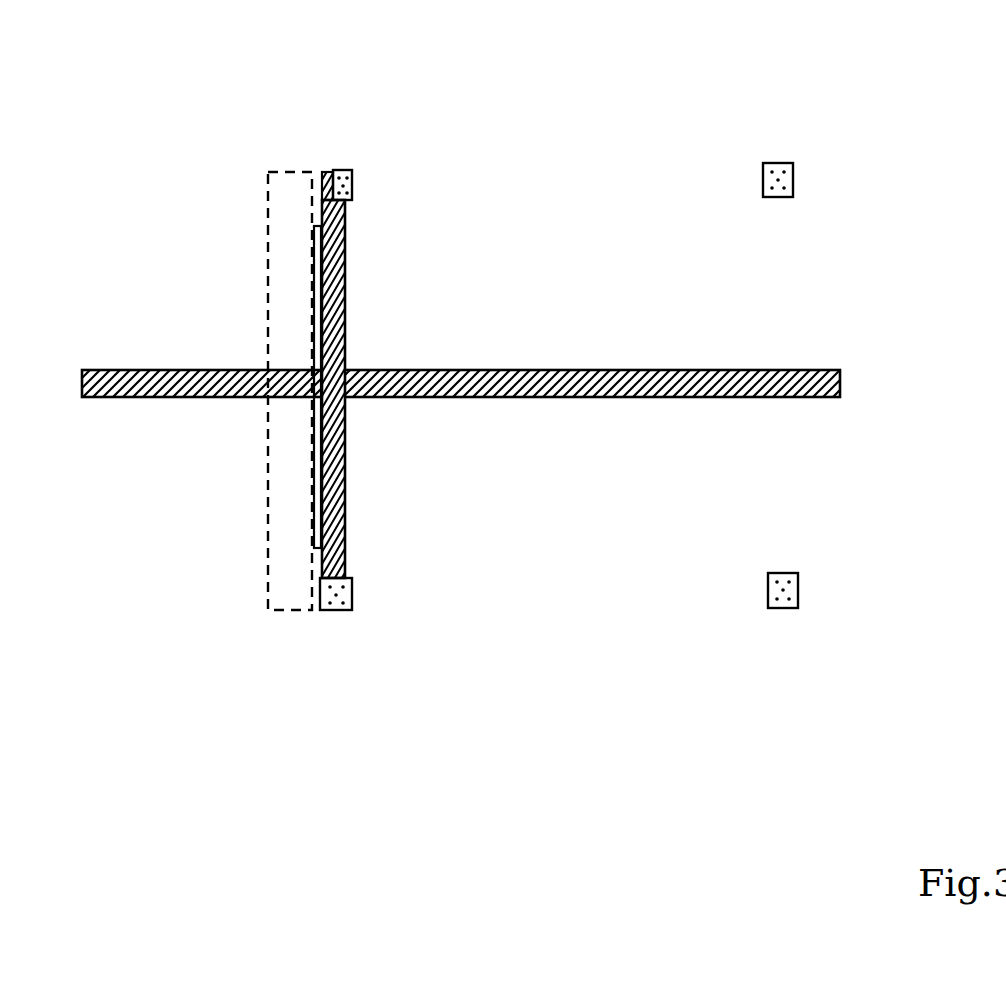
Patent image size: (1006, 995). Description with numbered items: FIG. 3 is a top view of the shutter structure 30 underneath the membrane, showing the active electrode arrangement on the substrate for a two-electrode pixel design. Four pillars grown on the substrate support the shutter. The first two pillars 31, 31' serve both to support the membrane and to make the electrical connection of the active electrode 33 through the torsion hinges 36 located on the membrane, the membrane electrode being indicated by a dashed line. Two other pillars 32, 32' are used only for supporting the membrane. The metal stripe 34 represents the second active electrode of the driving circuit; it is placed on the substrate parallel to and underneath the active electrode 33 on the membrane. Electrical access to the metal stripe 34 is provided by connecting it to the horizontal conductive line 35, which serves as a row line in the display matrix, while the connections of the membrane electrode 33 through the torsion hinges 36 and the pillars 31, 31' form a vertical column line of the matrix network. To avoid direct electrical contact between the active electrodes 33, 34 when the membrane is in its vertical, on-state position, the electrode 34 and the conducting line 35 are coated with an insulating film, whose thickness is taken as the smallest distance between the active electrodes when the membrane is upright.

The tapping device / test arrangement 30 is at (583, 150).
The pillar 31 is at (393, 152).
The pillar 31' is at (374, 614).
The pillar 32 is at (818, 151).
The pillar 32' is at (830, 608).
The active electrode 33 is at (268, 195).
The metal stripe 34 is at (345, 432).
The horizontal conductive line 35 is at (418, 375).
The torsion hinges 36 is at (327, 175).